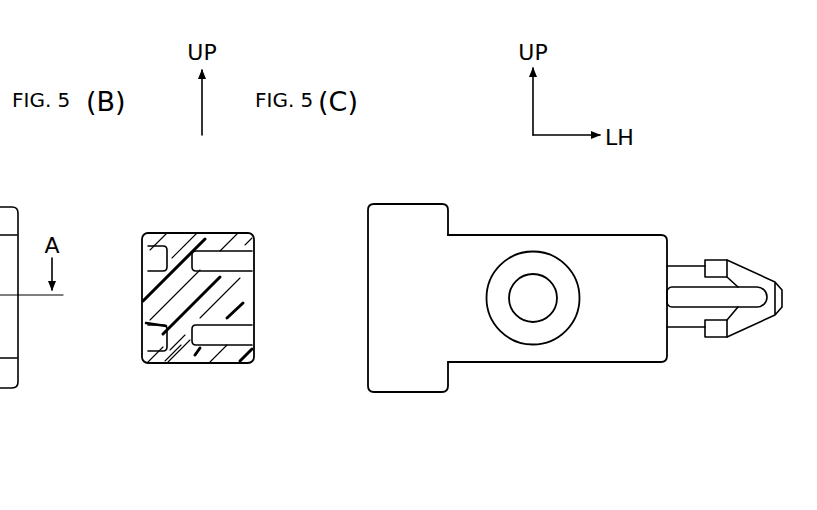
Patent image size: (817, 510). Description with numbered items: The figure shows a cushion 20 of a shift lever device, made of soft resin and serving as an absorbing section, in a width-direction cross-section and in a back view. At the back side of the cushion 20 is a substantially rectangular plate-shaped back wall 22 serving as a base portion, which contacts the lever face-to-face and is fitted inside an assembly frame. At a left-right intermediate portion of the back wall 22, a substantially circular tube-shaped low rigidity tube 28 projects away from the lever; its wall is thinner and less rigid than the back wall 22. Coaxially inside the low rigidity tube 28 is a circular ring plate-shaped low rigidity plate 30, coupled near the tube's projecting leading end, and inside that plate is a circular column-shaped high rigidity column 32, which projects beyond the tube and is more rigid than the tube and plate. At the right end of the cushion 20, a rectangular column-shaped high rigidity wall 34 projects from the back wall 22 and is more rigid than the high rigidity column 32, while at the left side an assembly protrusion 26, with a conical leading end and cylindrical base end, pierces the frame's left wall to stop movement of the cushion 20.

In FIG. 5B, the cushion 20 is at (173, 178).
In FIG. 5C, the cushion 20 is at (460, 183).
In FIG. 5C, the back wall 22 is at (487, 243).
In FIG. 5C, the assembly protrusion 26 is at (750, 272).
In FIG. 5B, the low rigidity tube 28 is at (203, 233).
In FIG. 5B, the low rigidity plate 30 is at (150, 330).
In FIG. 5C, the low rigidity plate 30 is at (555, 267).
In FIG. 5B, the high rigidity column 32 is at (252, 296).
In FIG. 5C, the high rigidity column 32 is at (531, 302).
In FIG. 5C, the high rigidity wall 34 is at (410, 320).